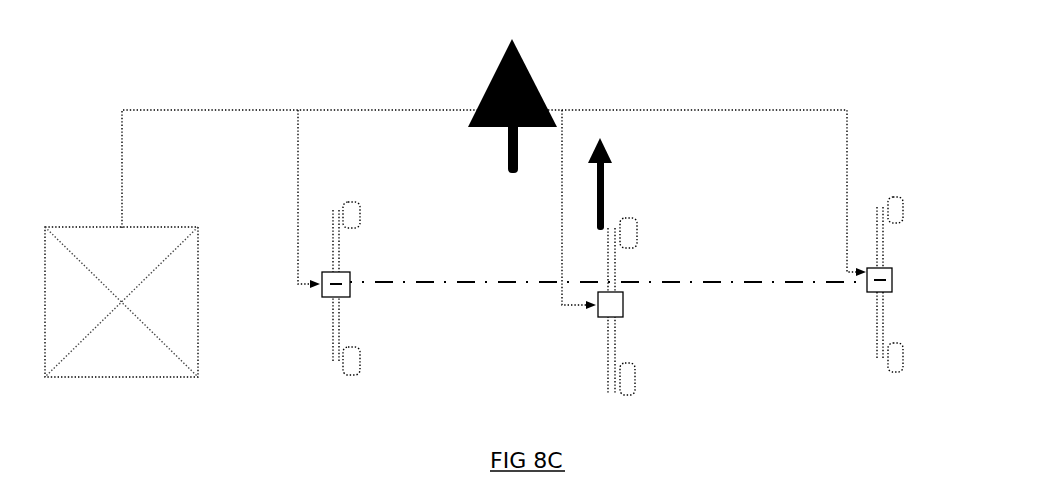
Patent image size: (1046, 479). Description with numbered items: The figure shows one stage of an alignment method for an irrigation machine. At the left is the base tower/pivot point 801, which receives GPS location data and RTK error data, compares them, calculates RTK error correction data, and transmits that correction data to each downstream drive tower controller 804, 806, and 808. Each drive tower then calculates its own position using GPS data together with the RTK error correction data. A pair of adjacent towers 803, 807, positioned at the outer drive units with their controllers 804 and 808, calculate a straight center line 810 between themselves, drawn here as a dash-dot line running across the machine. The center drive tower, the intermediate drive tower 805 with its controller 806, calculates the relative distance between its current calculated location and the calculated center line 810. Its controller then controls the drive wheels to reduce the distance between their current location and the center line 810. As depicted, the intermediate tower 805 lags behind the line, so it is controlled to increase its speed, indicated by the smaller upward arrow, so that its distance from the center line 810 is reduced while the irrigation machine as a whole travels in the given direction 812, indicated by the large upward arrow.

The base tower/pivot point 801 is at (148, 233).
The adjacent tower 803 is at (350, 199).
The drive tower controller 804 is at (348, 297).
The intermediate drive tower 805 is at (622, 219).
The drive tower controller 806 is at (623, 305).
The adjacent tower 807 is at (893, 196).
The drive tower controller 808 is at (890, 290).
The center line 810 is at (753, 280).
The direction of travel 812 is at (527, 62).